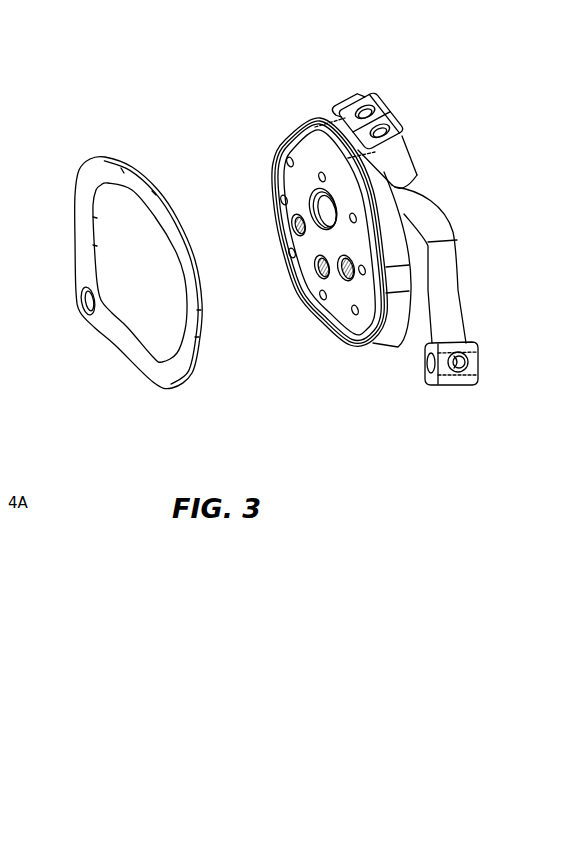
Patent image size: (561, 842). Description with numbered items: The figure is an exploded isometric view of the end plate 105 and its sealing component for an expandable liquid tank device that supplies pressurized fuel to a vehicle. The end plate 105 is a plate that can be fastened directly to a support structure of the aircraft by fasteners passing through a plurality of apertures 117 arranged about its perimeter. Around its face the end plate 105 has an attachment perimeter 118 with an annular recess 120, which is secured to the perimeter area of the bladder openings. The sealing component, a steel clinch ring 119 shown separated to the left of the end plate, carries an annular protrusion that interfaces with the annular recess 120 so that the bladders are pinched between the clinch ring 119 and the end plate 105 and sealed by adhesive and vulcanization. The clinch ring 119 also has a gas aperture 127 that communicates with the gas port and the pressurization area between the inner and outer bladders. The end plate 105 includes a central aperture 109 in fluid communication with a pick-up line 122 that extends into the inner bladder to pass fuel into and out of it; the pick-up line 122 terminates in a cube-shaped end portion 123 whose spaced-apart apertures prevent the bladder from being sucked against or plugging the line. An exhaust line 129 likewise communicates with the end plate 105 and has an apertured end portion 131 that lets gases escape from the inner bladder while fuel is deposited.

The end plate 105 is at (282, 60).
The aperture 109 is at (310, 204).
The apertures 117 is at (289, 160).
The attachment perimeter 118 is at (386, 355).
The clinch ring 119 is at (150, 367).
The annular recess 120 is at (368, 345).
The pick-up line 122 is at (468, 272).
The end portion 123 is at (482, 362).
The gas aperture 127 is at (83, 313).
The exhaust line 129 is at (408, 152).
The end portion 131 is at (390, 100).